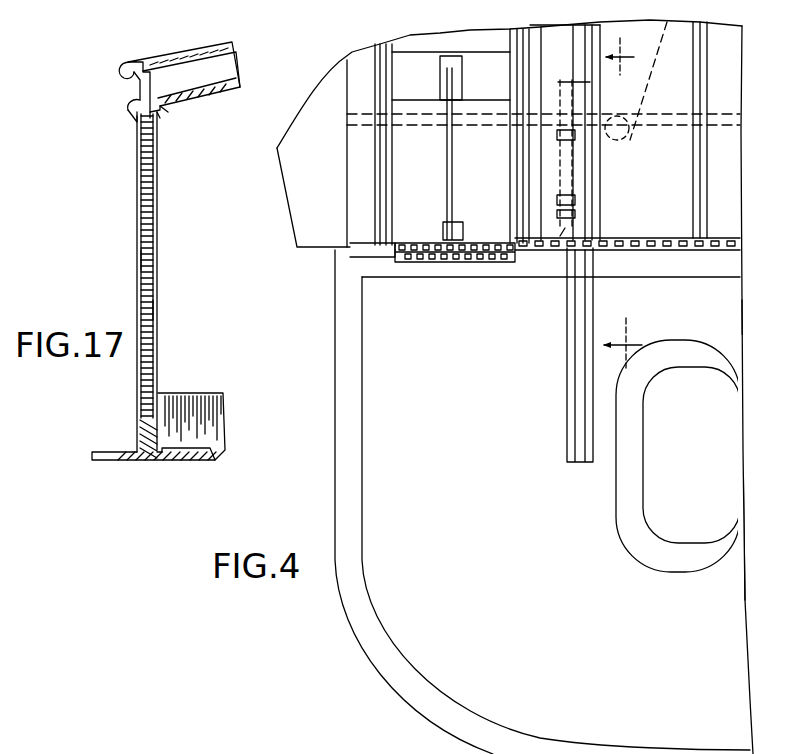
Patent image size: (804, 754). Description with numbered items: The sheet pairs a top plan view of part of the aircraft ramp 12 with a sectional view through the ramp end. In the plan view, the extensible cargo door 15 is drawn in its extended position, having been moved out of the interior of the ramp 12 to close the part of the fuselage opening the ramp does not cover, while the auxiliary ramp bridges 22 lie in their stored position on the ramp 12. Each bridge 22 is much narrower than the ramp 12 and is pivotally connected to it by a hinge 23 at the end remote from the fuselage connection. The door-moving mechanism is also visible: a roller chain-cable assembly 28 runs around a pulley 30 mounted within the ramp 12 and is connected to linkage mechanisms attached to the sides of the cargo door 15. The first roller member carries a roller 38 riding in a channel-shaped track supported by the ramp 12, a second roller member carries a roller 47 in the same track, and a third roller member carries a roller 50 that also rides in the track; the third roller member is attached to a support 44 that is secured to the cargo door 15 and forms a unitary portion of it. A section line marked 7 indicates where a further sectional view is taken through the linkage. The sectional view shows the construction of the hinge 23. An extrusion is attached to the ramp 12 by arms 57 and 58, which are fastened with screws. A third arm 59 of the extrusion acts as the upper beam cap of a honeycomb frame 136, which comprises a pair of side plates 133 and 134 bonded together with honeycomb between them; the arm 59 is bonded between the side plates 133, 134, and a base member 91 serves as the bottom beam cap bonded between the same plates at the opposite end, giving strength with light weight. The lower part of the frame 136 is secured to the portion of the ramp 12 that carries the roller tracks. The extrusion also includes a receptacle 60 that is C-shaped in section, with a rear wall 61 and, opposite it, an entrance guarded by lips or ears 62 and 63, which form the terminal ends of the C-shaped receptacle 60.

In FIG. 4, the section line 7- 7 is at (625, 197).
In FIG. 17, the ramp 12 is at (210, 34).
In FIG. 4, the extensible cargo door 15 is at (336, 500).
In FIG. 4, the bridge 22 is at (440, 183).
In FIG. 4, the hinge 23 is at (416, 262).
In FIG. 4, the roller chain-cable assembly 28 is at (652, 52).
In FIG. 4, the pulley 30 is at (629, 130).
In FIG. 4, the roller 38 is at (578, 108).
In FIG. 4, the support 44 is at (567, 376).
In FIG. 4, the roller 47 is at (562, 200).
In FIG. 4, the roller 50 is at (560, 246).
In FIG. 17, the arm 57 is at (172, 60).
In FIG. 17, the arm 58 is at (184, 107).
In FIG. 17, the third arm 59 is at (158, 120).
In FIG. 17, the receptacle 60 is at (130, 93).
In FIG. 17, the rear wall 61 is at (128, 81).
In FIG. 17, the ear 62 is at (120, 68).
In FIG. 17, the ear 63 is at (126, 100).
In FIG. 17, the base member 91 is at (142, 461).
In FIG. 17, the side plate 133 is at (137, 203).
In FIG. 17, the side plate 134 is at (157, 316).
In FIG. 17, the honeycomb frame 136 is at (157, 262).